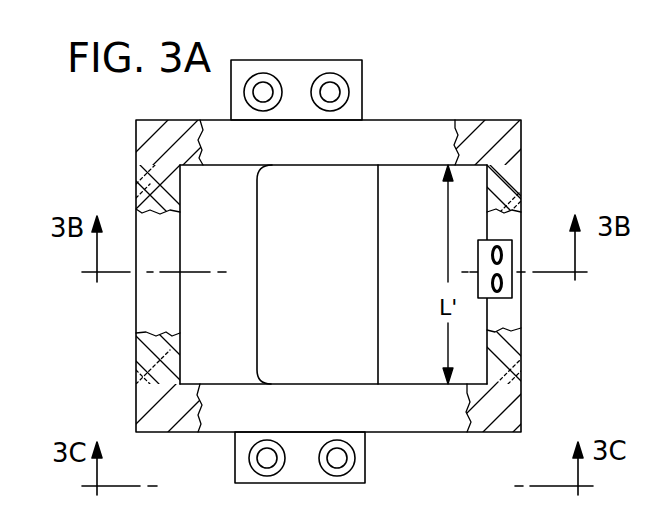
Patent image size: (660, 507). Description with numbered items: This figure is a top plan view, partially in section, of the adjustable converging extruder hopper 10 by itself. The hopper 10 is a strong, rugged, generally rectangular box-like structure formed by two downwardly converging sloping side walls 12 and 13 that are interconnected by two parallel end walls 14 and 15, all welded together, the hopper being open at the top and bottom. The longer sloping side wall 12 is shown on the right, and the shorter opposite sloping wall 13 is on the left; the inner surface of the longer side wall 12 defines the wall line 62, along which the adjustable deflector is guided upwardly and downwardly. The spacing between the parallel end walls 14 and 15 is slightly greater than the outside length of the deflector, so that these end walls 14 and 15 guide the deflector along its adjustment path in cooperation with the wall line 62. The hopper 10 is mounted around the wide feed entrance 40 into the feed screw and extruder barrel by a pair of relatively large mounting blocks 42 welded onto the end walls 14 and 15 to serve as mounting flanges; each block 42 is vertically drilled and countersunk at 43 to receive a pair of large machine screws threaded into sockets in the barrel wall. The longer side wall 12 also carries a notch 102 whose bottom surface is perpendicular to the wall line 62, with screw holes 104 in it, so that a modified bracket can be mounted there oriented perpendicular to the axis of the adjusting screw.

The adjustable converging extruder hopper 10 is at (560, 126).
The sloping side wall 12 is at (512, 327).
The sloping side wall 13 is at (148, 318).
The end wall 14 is at (447, 135).
The end wall 15 is at (433, 413).
The feed entrance 40 is at (330, 256).
The mounting block 42 is at (363, 75).
The drilled and countersunk hole 43 is at (263, 76).
The wall line 62 is at (392, 303).
The notch 102 is at (518, 247).
The screw hole 104 is at (503, 285).